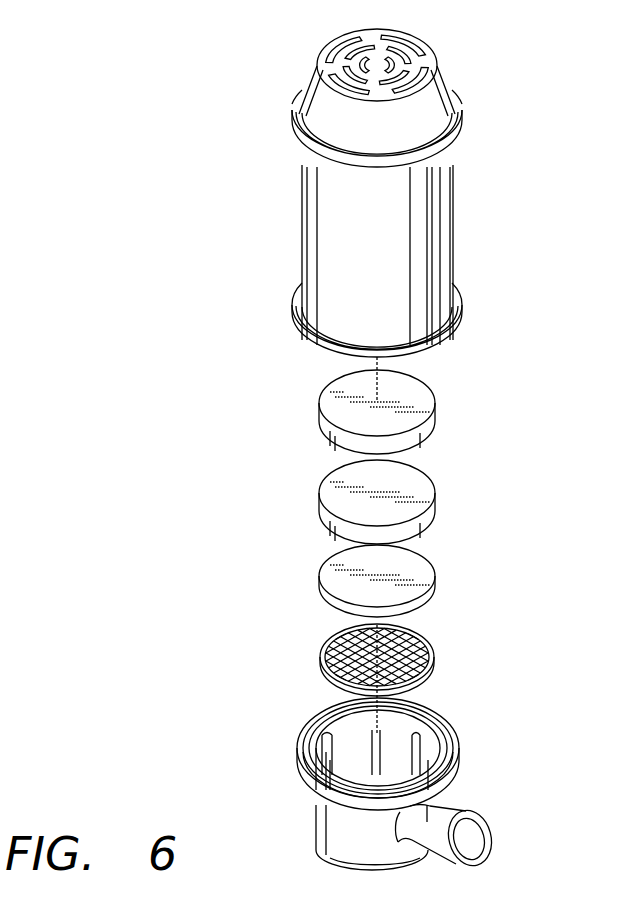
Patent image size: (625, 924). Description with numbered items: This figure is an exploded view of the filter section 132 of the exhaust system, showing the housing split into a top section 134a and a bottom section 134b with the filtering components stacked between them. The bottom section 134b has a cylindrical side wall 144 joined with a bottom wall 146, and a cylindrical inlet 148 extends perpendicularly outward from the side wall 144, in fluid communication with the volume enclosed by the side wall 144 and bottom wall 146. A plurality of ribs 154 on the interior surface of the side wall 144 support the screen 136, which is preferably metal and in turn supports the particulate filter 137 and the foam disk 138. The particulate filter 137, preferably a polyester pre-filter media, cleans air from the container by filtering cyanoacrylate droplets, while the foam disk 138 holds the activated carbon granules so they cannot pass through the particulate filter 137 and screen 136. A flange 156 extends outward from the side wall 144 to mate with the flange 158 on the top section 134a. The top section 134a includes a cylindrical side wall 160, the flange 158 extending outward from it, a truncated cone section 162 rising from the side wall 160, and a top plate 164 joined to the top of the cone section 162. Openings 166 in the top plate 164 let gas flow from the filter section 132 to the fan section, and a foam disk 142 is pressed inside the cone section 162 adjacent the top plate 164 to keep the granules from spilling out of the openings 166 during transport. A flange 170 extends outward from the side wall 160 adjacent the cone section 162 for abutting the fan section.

The filter section 132 is at (504, 368).
The top section 134a is at (415, 255).
The bottom section 134b is at (394, 741).
The screen 136 is at (433, 660).
The particulate filter 137 is at (433, 582).
The foam disk 138 is at (433, 507).
The foam disk 142 is at (433, 420).
The cylindrical side wall 144 is at (343, 830).
The bottom wall 146 is at (347, 862).
The cylindrical inlet 148 is at (468, 806).
The ribs 154 is at (323, 727).
The flange 156 is at (298, 752).
The flange 158 is at (461, 302).
The cylindrical side wall 160 is at (442, 247).
The truncated cone section 162 is at (405, 58).
The top plate 164 is at (392, 50).
The openings 166 is at (343, 40).
The flange 170 is at (460, 118).